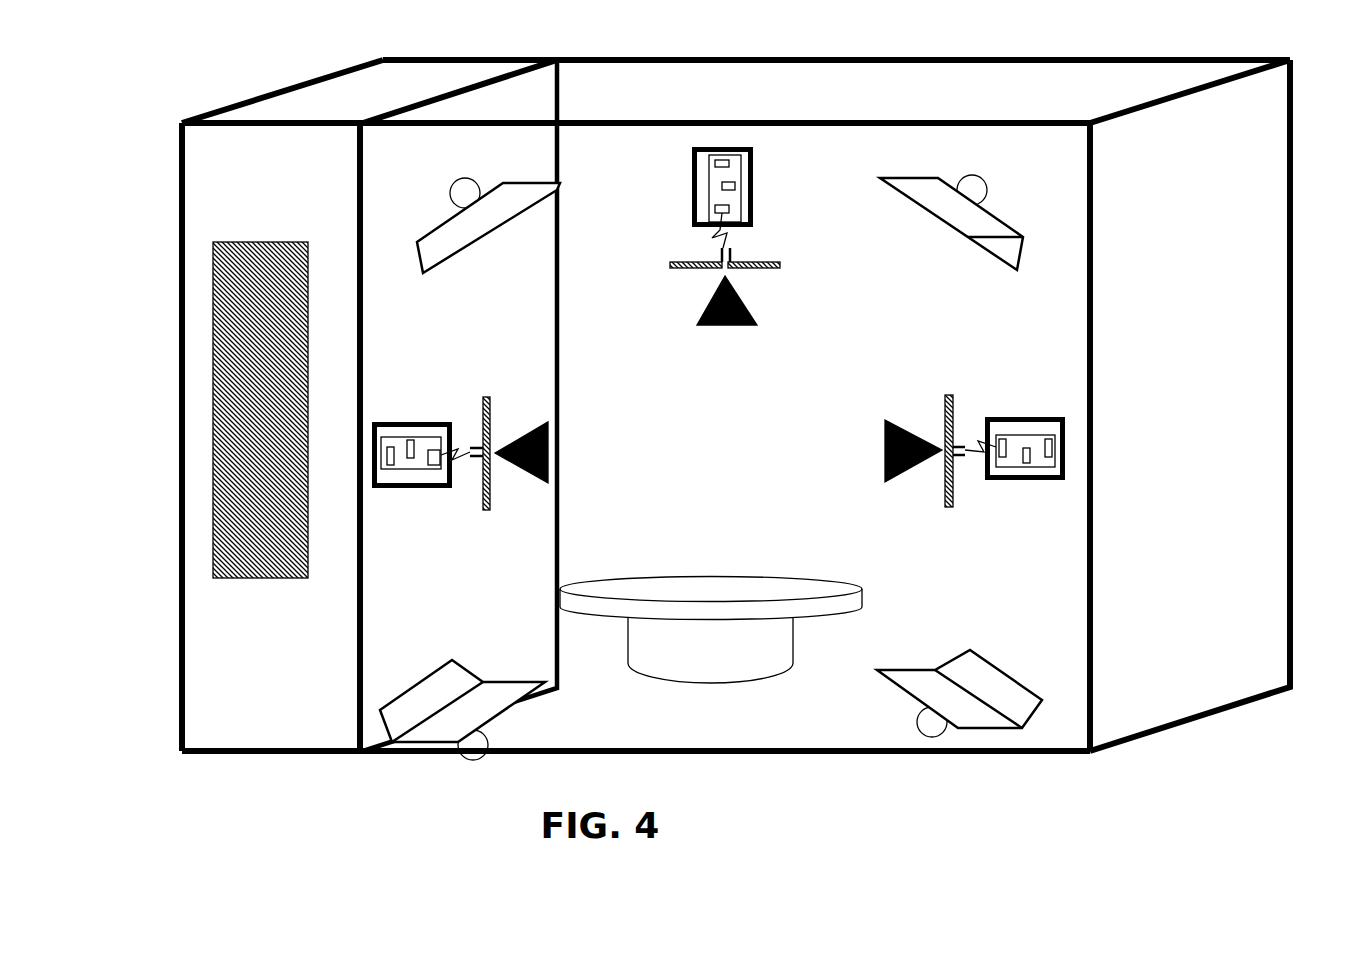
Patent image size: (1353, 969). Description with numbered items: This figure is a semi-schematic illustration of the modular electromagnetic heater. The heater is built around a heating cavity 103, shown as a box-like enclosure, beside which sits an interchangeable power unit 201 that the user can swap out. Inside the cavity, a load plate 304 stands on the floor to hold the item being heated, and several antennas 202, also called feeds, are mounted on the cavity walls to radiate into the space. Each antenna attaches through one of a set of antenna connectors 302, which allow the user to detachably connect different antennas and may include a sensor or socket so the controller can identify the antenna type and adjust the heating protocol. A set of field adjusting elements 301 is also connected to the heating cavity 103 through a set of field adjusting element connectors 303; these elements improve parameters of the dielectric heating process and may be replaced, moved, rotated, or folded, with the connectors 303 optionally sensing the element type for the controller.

The heating cavity 103 is at (1207, 483).
The interchangeable power unit 201 is at (262, 582).
The antennas 202 is at (553, 452).
The field adjusting elements 301 is at (490, 273).
The antenna connectors 302 is at (438, 452).
The field adjusting element connectors 303 is at (463, 175).
The load plate 304 is at (713, 685).